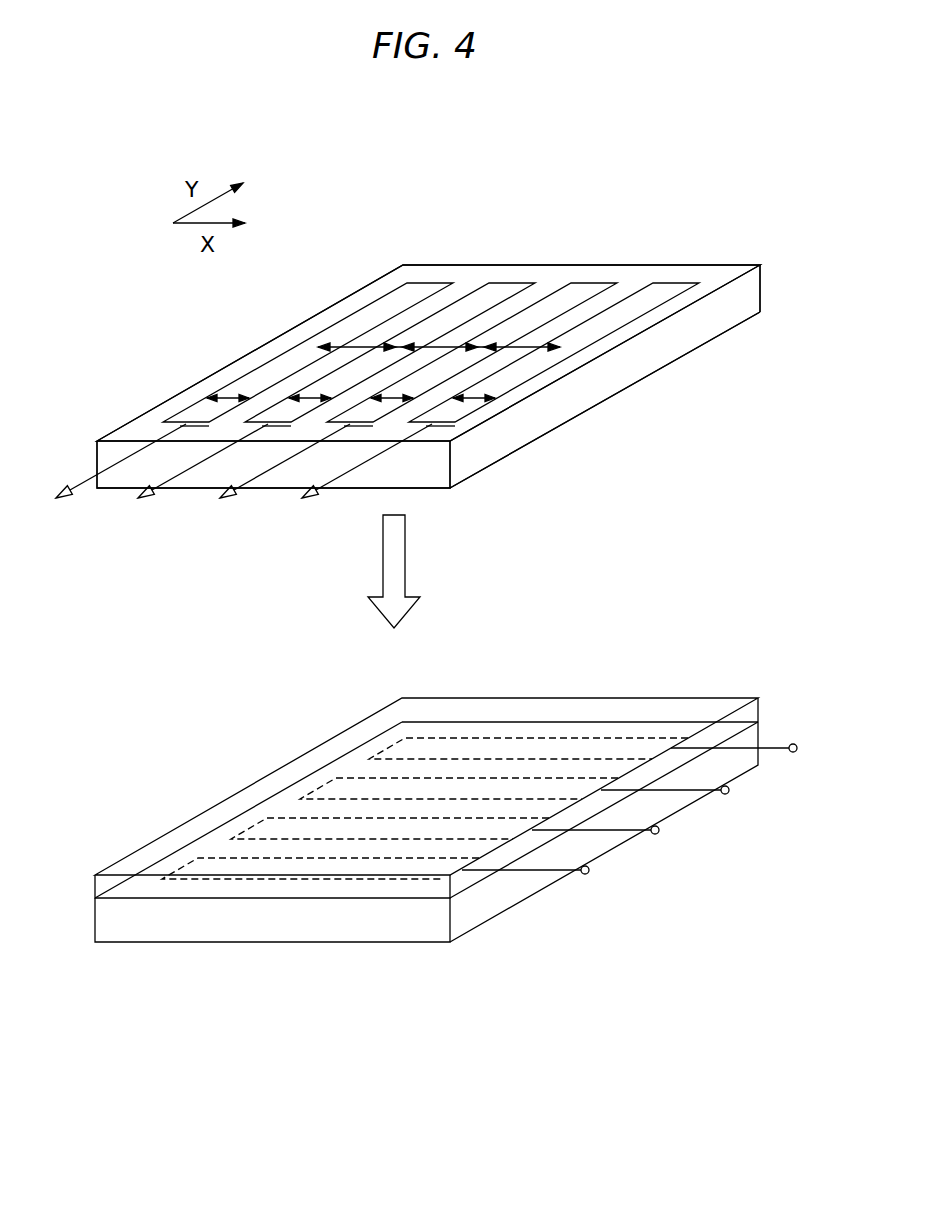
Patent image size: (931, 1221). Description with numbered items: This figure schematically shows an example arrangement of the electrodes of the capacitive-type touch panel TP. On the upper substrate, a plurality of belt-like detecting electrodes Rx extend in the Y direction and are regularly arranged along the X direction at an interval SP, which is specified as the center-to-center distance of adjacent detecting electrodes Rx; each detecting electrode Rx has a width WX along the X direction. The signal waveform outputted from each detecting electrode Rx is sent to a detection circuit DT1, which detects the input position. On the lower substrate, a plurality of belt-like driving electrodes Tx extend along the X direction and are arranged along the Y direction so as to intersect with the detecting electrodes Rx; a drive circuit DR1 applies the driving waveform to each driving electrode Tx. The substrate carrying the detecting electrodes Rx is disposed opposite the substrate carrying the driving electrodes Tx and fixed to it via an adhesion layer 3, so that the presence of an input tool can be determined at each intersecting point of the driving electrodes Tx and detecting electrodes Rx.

The touch panel TP is at (739, 235).
The detecting electrode Rx is at (424, 287).
The interval SP is at (440, 345).
The width WX is at (308, 393).
The detection circuit DT1 is at (235, 479).
The adhesion layer 3 is at (432, 697).
The driving electrode Tx is at (388, 748).
The drive circuit DR1 is at (656, 810).